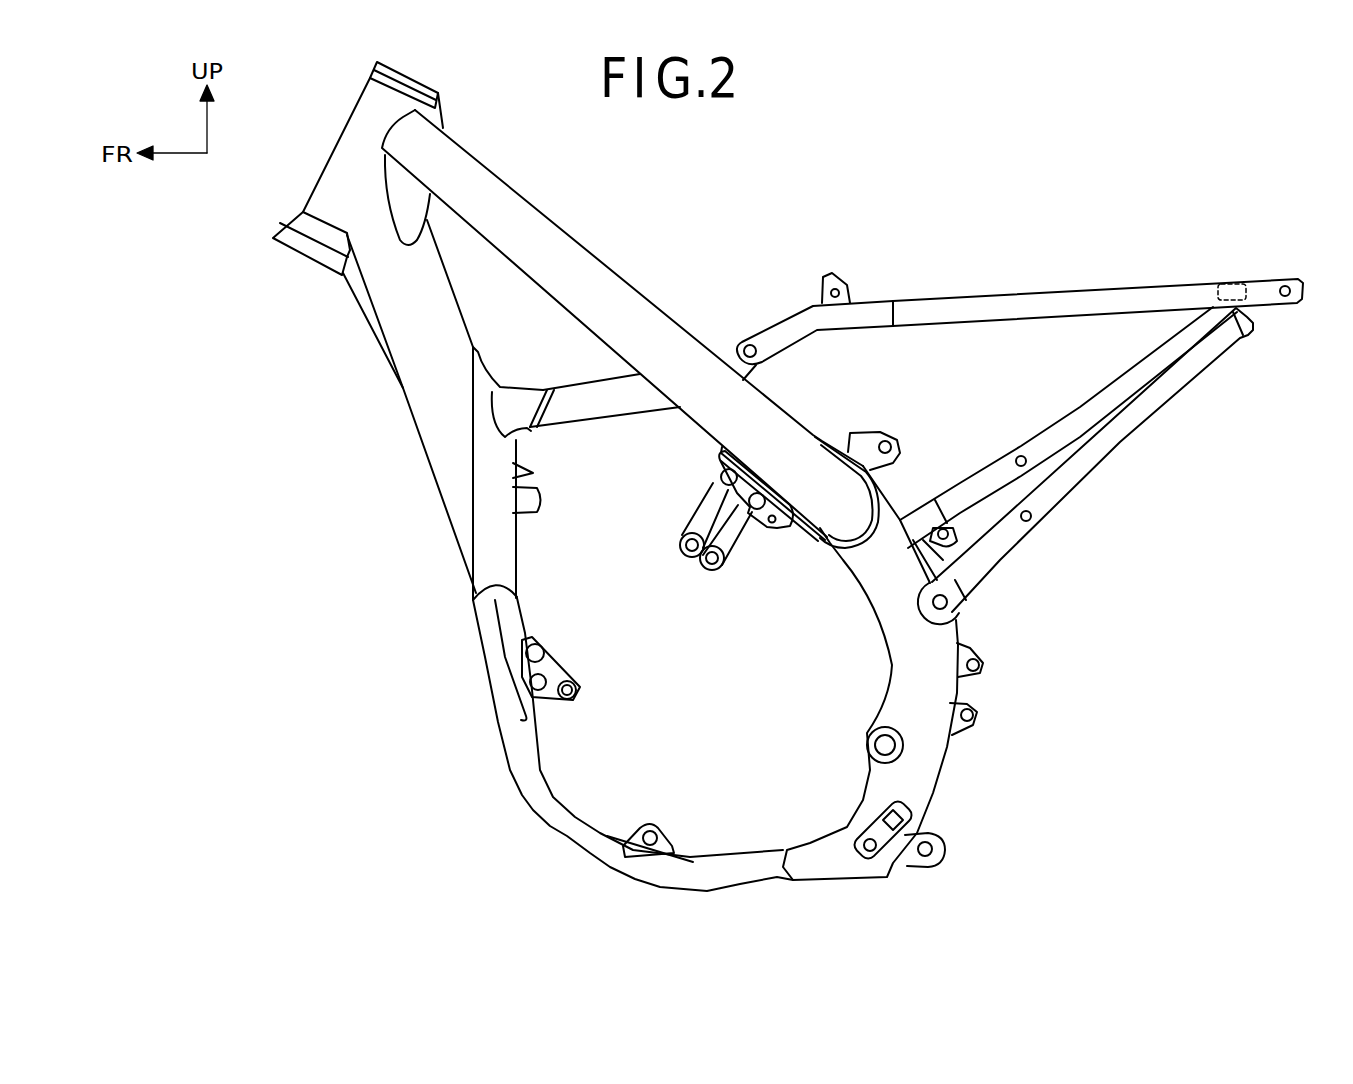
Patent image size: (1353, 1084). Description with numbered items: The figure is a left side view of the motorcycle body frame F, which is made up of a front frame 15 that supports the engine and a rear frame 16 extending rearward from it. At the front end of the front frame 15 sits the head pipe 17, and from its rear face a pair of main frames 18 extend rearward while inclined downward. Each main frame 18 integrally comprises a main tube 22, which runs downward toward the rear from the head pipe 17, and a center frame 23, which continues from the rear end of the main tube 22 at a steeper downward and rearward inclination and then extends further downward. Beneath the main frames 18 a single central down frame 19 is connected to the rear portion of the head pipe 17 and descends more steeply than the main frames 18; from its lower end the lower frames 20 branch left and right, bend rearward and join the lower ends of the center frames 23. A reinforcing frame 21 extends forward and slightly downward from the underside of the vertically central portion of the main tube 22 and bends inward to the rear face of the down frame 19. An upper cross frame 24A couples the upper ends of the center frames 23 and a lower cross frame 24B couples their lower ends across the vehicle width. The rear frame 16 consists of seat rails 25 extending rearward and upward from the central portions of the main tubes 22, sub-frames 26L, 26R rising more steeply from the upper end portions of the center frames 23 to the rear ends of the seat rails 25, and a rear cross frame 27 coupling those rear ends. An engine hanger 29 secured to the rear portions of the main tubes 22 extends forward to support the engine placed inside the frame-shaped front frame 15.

The body frame F is at (858, 151).
The front frame 15 is at (634, 266).
The rear frame 16 is at (965, 278).
The head pipe 17 is at (356, 150).
The main frame 18 is at (782, 645).
The down frame 19 is at (430, 391).
The lower frame 20 is at (637, 872).
The reinforcing frame 21 is at (597, 407).
The main tube 22 is at (643, 352).
The center frame 23 is at (910, 653).
The upper cross frame 24A is at (862, 455).
The lower cross frame 24B is at (910, 853).
The seat rail 25 is at (1083, 293).
The right sub-frame 26R is at (1040, 443).
The left sub-frame 26L is at (1070, 468).
The rear cross frame 27 is at (1240, 297).
The engine hanger 29 is at (697, 493).